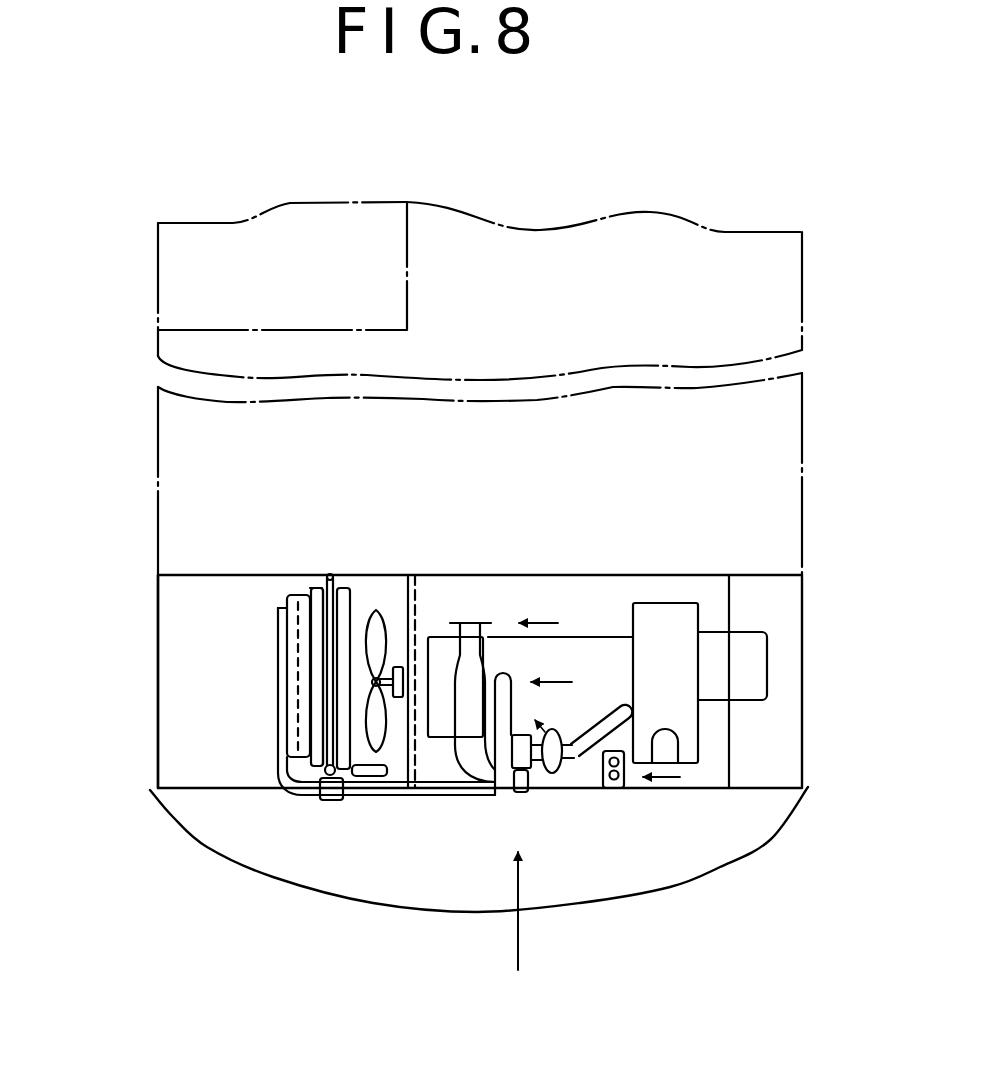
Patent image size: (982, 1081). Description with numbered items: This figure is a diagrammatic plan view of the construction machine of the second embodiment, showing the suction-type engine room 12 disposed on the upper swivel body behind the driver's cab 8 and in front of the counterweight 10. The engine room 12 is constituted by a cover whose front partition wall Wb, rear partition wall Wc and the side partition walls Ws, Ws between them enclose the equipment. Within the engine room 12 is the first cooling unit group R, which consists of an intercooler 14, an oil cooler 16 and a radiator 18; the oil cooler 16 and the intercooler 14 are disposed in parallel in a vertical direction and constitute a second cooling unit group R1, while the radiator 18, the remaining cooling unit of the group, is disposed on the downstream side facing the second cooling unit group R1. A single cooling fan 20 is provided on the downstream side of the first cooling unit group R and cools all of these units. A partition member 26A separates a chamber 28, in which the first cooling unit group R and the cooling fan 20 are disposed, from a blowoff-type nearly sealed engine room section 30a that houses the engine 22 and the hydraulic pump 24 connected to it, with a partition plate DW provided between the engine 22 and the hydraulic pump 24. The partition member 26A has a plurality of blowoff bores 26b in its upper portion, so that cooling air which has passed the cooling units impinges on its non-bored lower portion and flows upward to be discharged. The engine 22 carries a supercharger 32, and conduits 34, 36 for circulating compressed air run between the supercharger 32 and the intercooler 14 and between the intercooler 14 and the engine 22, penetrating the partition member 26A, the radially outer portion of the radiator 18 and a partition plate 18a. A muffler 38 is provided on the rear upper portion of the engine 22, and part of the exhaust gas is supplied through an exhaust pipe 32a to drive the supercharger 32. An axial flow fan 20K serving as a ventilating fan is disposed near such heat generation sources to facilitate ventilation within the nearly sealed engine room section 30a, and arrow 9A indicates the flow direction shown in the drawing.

The driver's cab 8 is at (170, 303).
The counterweight 10 is at (217, 840).
The engine room 12 is at (767, 568).
The intercooler 14 is at (273, 677).
The oil cooler 16 is at (297, 592).
The radiator 18 is at (330, 635).
The partition plate 18a is at (327, 600).
The cooling fan 20 is at (378, 610).
The axial flow fan 20K is at (640, 790).
The engine 22 is at (590, 645).
The hydraulic pump 24 is at (753, 663).
The partition member 26A is at (414, 603).
The blowoff bores 26b is at (418, 638).
The chamber 28 is at (182, 615).
The nearly sealed engine room section 30a is at (608, 583).
The supercharger 32 is at (520, 790).
The exhaust pipe 32a is at (545, 733).
The conduit 34 is at (492, 797).
The conduit 36 is at (370, 795).
The muffler 38 is at (668, 620).
The air flow direction 9A is at (523, 923).
The first cooling unit group R is at (302, 560).
The second cooling unit group R1 is at (258, 728).
The side partition walls Ws is at (802, 765).
The front partition wall Wb is at (578, 575).
The rear partition wall Wc is at (437, 797).
The partition plate DW is at (729, 750).